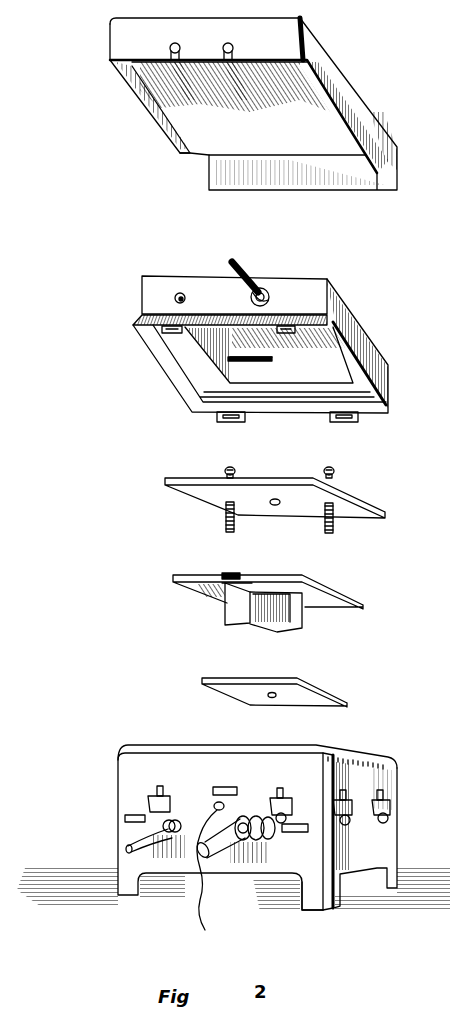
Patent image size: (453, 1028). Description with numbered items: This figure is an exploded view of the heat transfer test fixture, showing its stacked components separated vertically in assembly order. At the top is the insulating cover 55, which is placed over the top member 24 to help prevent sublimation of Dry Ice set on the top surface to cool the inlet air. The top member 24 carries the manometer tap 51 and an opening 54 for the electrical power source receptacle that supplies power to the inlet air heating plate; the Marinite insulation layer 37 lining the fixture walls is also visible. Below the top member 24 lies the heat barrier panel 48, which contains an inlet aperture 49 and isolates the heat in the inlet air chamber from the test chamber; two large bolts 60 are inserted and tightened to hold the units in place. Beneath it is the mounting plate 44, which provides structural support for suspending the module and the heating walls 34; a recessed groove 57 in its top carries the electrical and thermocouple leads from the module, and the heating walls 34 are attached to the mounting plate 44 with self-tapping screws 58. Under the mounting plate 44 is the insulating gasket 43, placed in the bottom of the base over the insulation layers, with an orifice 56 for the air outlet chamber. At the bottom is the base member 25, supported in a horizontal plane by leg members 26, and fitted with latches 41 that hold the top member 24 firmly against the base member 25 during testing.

The insulating cover 55 is at (338, 75).
The top member 24 is at (261, 335).
The manometer tap 51 is at (178, 293).
The opening 54 is at (259, 281).
The insulation layer 37 is at (285, 366).
The heat barrier panel 48 is at (301, 495).
The bolt 60 is at (334, 478).
The inlet aperture 49 is at (275, 498).
The mounting plate 44 is at (289, 598).
The recessed groove 57 is at (241, 578).
The heating wall 34 is at (277, 618).
The self-tapping screw 58 is at (282, 600).
The insulating gasket 43 is at (294, 710).
The orifice 56 is at (272, 698).
The base member 25 is at (233, 846).
The latch 41 is at (390, 808).
The leg member 26 is at (312, 900).